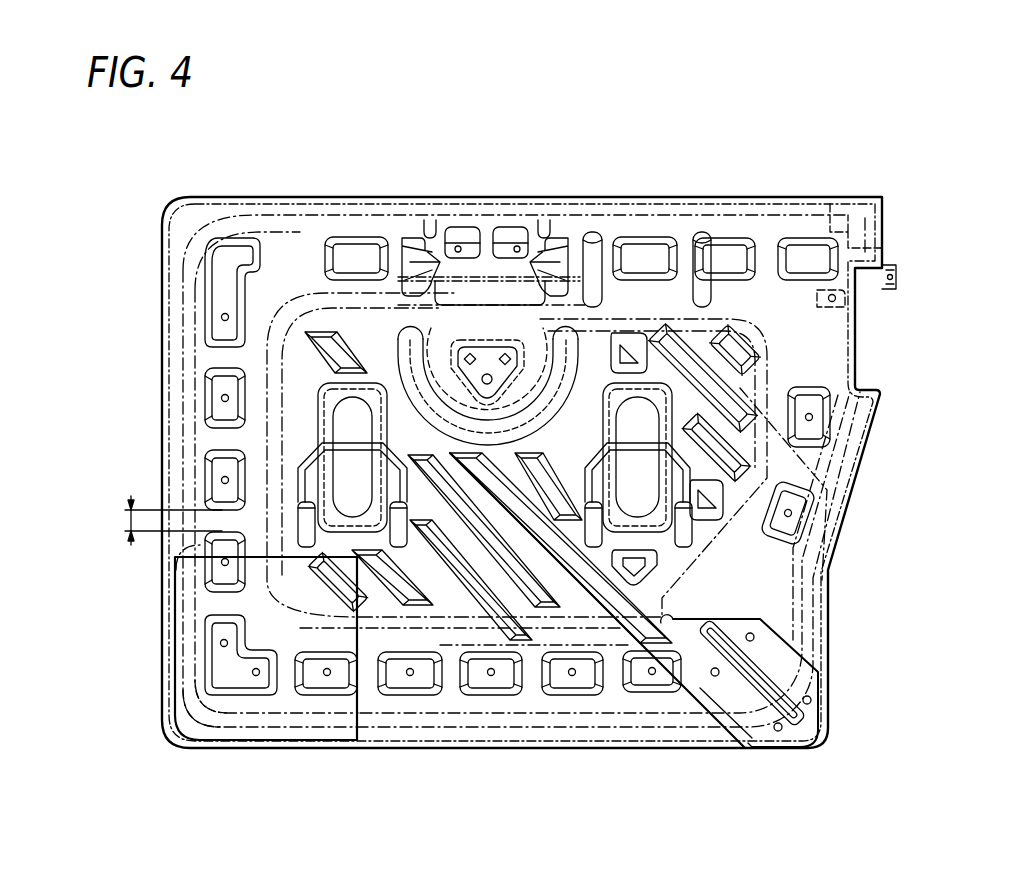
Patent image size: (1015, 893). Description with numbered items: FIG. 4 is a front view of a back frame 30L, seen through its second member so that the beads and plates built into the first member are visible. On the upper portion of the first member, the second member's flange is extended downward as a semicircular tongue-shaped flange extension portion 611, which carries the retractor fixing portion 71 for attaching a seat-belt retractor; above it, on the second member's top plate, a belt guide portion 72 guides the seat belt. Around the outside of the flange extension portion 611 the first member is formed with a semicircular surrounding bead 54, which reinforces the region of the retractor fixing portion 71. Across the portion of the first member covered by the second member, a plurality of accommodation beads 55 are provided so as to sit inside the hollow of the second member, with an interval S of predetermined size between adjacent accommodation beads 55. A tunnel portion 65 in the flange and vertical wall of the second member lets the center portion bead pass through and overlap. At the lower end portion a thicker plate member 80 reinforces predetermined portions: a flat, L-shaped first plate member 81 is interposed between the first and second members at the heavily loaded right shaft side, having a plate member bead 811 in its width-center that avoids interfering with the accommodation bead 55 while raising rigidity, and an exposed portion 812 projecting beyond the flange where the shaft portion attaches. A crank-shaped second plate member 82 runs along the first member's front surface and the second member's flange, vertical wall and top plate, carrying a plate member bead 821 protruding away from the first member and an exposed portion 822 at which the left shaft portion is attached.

The left door inner panel 30L is at (266, 175).
The surrounding bead 54 is at (501, 294).
The belt guide portion 72 is at (452, 240).
The retractor fixing portion 71 is at (486, 352).
The flange extension portion 611 is at (528, 377).
The accommodation bead 55 is at (806, 257).
The interval S is at (128, 522).
The plate member bead 811 is at (223, 603).
The exposed portion 812 is at (196, 728).
The first plate member 81 is at (363, 700).
The plate member 80 is at (531, 699).
The tunnel portion 65 is at (628, 633).
The second plate member 82 is at (819, 691).
The plate member bead 821 is at (750, 643).
The exposed portion 822 is at (757, 727).